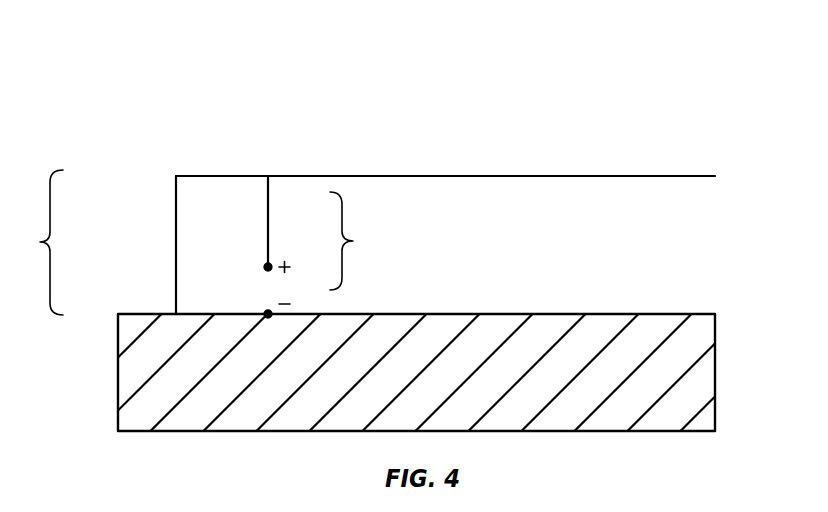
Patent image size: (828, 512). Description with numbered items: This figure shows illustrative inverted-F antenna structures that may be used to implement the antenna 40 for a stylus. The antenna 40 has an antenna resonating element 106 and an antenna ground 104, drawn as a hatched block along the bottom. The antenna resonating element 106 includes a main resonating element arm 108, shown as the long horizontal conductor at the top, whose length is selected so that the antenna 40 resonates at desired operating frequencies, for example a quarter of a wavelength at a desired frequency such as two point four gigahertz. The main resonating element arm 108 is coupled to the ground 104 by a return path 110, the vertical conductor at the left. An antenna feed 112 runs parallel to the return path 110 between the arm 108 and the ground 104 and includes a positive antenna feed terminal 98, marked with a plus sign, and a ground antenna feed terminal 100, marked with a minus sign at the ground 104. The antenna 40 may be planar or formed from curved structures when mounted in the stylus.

The antenna 40 is at (769, 76).
The positive antenna feed terminal 98 is at (265, 267).
The ground antenna feed terminal 100 is at (265, 313).
The antenna ground 104 is at (125, 378).
The antenna resonating element 106 is at (34, 242).
The main resonating element arm 108 is at (460, 175).
The return path 110 is at (176, 250).
The antenna feed 112 is at (356, 241).